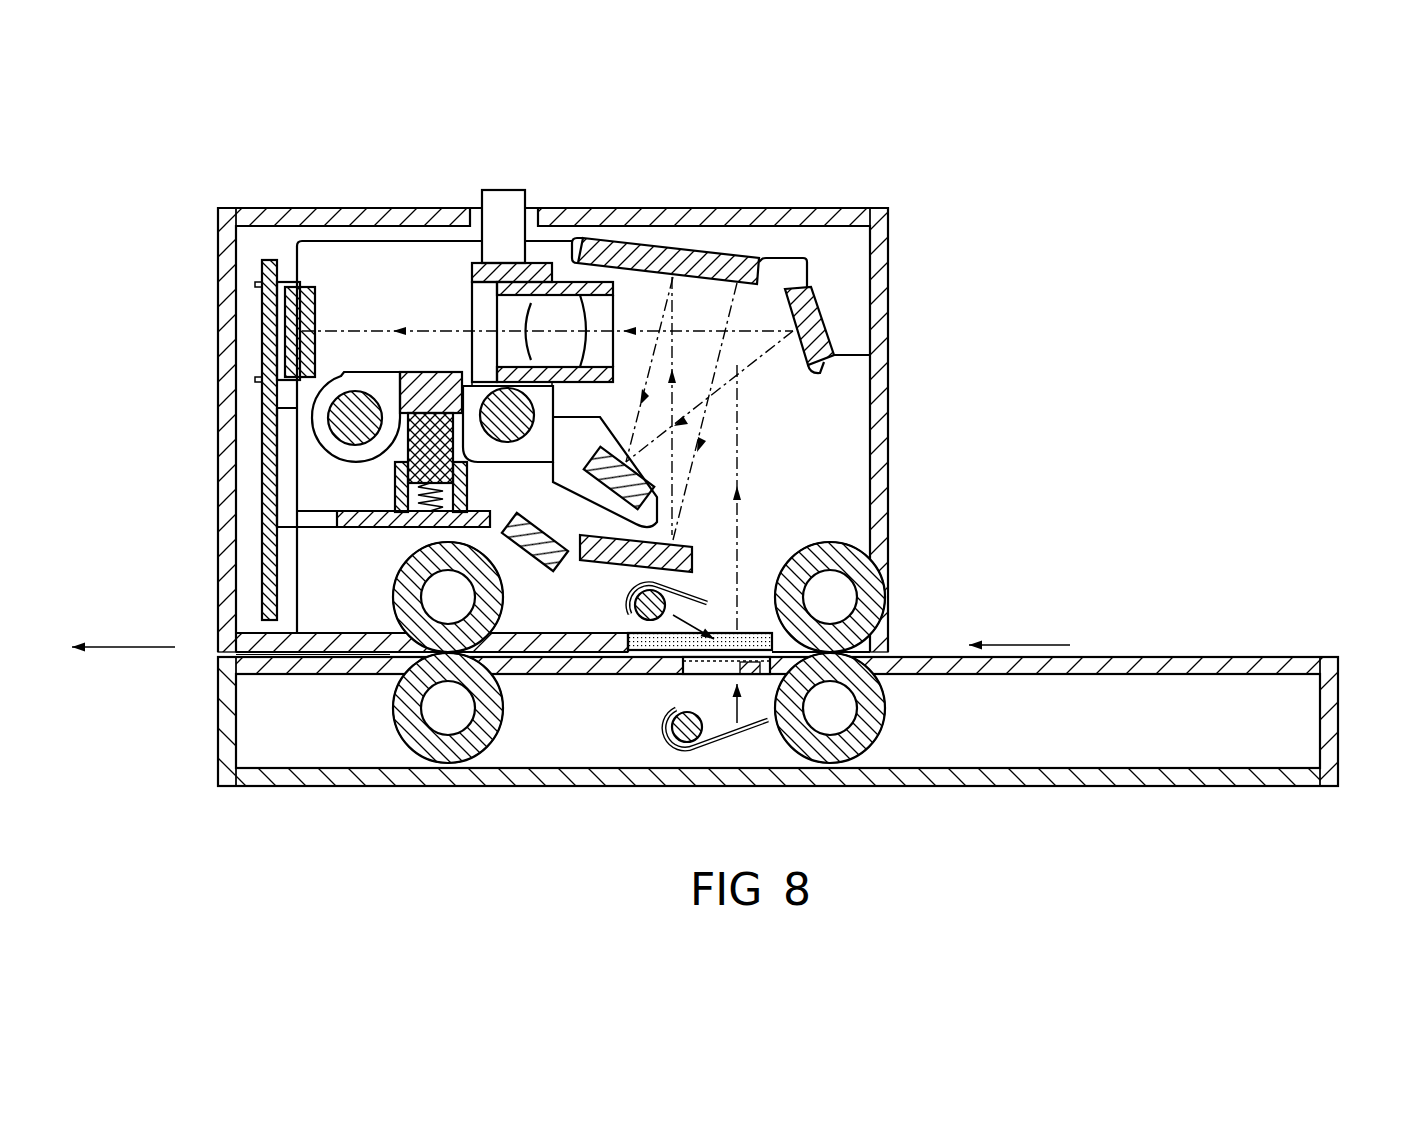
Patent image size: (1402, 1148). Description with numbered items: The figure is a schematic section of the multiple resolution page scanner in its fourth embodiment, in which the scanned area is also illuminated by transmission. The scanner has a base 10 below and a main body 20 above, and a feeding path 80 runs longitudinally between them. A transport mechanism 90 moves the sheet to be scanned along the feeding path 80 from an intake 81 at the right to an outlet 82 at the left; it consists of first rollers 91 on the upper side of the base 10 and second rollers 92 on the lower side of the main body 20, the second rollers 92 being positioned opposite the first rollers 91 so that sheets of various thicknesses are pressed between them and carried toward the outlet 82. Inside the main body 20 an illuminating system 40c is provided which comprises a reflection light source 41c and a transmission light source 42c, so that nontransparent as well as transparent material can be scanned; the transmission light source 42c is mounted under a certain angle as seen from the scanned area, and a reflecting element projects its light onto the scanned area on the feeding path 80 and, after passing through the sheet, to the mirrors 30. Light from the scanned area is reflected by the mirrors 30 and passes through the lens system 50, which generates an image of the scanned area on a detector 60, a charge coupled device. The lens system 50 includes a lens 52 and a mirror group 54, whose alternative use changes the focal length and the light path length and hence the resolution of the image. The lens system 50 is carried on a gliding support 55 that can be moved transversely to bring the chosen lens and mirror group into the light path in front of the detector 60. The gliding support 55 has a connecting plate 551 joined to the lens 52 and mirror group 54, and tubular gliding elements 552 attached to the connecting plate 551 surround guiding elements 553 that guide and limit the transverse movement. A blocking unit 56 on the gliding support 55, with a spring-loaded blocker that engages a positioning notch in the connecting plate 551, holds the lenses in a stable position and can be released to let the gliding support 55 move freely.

The base 10 is at (1347, 677).
The main body 20 is at (900, 475).
The mirrors 30 is at (735, 240).
The lens system 50 is at (464, 310).
The lens 52 is at (477, 286).
The mirror group 54 is at (622, 465).
The gliding support 55 is at (443, 350).
The connecting plate 551 is at (407, 377).
The gliding elements 552 is at (340, 452).
The guiding elements 553 is at (330, 420).
The blocking unit 56 is at (397, 483).
The detector 60 is at (302, 317).
The feeding path 80 is at (347, 659).
The intake 81 is at (890, 650).
The outlet 82 is at (217, 653).
The transport mechanism 90 is at (683, 700).
The first rollers 91 is at (878, 703).
The second rollers 92 is at (873, 587).
The illuminating system 40c is at (621, 607).
The reflection light source 41c is at (637, 623).
The transmission light source 42c is at (672, 746).